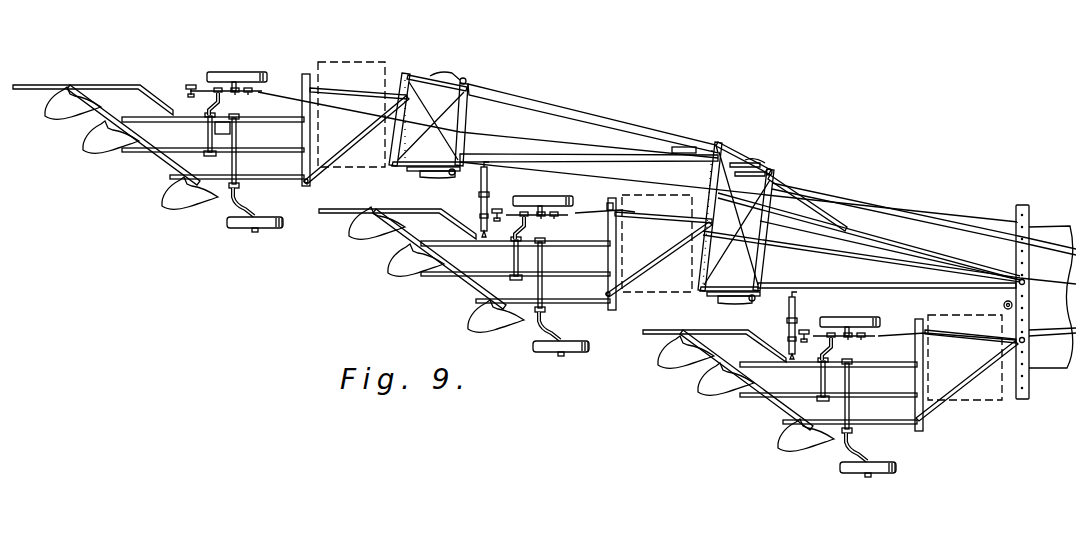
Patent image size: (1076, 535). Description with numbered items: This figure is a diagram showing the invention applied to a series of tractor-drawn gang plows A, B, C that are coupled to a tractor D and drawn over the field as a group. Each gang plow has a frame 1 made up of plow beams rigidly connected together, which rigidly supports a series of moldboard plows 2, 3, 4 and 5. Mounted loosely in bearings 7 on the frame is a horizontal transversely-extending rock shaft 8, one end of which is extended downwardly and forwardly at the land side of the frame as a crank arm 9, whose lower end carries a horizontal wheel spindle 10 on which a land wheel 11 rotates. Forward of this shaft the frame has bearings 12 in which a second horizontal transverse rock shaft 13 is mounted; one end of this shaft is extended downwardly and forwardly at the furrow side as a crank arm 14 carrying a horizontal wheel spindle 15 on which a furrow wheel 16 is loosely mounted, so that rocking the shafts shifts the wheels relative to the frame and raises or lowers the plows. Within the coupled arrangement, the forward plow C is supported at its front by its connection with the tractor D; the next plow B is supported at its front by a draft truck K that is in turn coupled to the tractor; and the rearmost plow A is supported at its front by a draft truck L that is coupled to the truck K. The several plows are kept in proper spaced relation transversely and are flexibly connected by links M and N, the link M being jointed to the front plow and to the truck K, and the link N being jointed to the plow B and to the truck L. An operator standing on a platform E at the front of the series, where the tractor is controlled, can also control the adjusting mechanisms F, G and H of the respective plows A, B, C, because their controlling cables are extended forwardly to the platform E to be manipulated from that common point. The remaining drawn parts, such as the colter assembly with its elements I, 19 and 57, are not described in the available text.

The frame 1 is at (213, 140).
The moldboard plow 2 is at (182, 197).
The moldboard plow 3 is at (134, 170).
The moldboard plow 4 is at (92, 142).
The moldboard plow 5 is at (58, 98).
The bearing 7 is at (206, 158).
The rock shaft 8 is at (206, 135).
The crank arm 9 is at (237, 112).
The wheel spindle 10 is at (242, 72).
The land wheel 11 is at (213, 72).
The bearing 12 is at (240, 120).
The rock shaft 13 is at (238, 160).
The crank arm 14 is at (250, 202).
The wheel spindle 15 is at (258, 229).
The furrow wheel 16 is at (230, 226).
The clip 19 is at (222, 128).
The lever clip 57 is at (186, 84).
The gang plow A is at (416, 193).
The gang plow B is at (477, 259).
The gang plow C is at (829, 384).
The tractor D is at (1040, 393).
The platform E is at (1027, 302).
The adjusting mechanism F is at (295, 98).
The adjusting mechanism G is at (605, 202).
The adjusting mechanism H is at (905, 334).
The colter shaft I is at (264, 72).
The draft truck K is at (742, 228).
The draft truck L is at (466, 82).
The link M is at (787, 323).
The link N is at (480, 206).